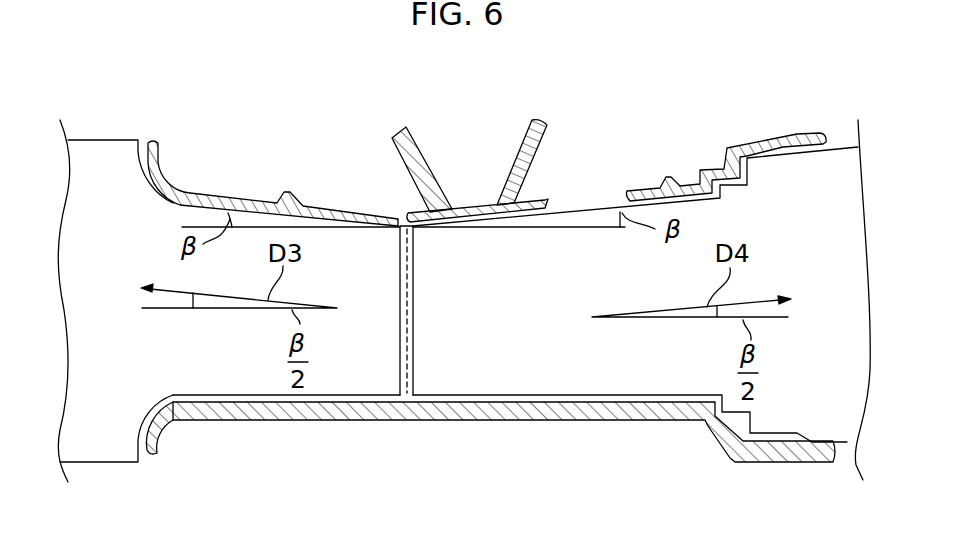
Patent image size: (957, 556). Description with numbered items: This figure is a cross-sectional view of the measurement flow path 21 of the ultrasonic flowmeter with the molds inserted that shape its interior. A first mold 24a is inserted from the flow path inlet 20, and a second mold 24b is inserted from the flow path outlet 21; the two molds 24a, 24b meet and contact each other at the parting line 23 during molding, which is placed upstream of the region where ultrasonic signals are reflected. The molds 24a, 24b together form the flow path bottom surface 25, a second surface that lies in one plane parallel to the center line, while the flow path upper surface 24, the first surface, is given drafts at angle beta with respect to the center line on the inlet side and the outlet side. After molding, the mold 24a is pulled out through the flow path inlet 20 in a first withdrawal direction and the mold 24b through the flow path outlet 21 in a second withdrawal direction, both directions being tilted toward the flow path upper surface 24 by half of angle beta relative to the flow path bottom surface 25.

The flow path inlet 20 is at (213, 192).
The measurement flow path 21 is at (766, 143).
The parting line 23 is at (407, 300).
The flow path upper surface 24 is at (171, 205).
The mold 24a is at (262, 370).
The mold 24b is at (628, 370).
The flow path bottom surface 25 is at (203, 401).